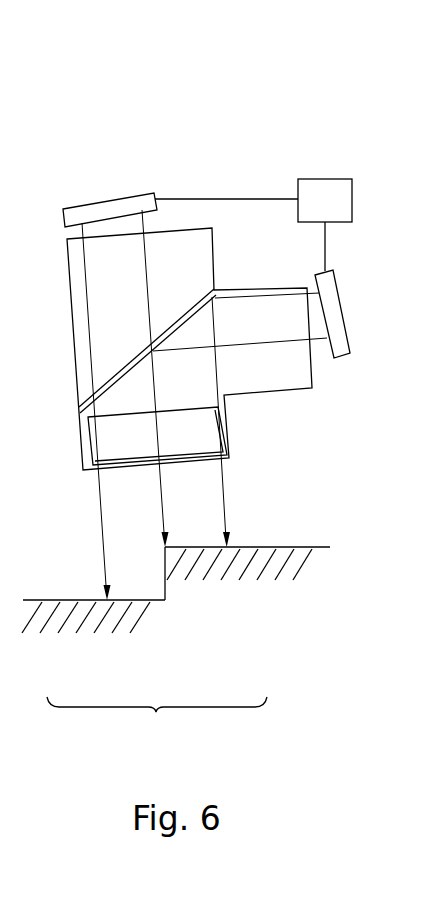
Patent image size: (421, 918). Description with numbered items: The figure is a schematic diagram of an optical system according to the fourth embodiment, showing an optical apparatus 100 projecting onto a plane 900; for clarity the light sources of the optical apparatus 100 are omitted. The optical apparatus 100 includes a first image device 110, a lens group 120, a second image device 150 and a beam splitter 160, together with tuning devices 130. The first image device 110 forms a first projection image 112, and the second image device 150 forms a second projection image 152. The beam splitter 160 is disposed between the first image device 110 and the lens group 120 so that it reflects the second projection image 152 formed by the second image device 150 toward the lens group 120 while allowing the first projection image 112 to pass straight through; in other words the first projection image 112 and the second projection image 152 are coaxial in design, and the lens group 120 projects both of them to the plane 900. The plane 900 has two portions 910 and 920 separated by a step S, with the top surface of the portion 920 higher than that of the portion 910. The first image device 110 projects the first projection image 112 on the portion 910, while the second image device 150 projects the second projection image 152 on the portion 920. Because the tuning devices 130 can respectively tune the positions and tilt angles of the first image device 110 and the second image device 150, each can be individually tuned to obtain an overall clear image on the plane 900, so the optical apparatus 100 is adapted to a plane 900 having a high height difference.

The optical apparatus 100 is at (233, 135).
The first image device 110 is at (105, 207).
The first projection image 112 is at (76, 266).
The lens group 120 is at (112, 433).
The tuning device 130 is at (318, 205).
The second image device 150 is at (337, 342).
The second projection image 152 is at (271, 356).
The beam splitter 160 is at (128, 365).
The plane 900 is at (157, 722).
The portion 910 is at (80, 615).
The portion 920 is at (232, 568).
The step S is at (167, 577).